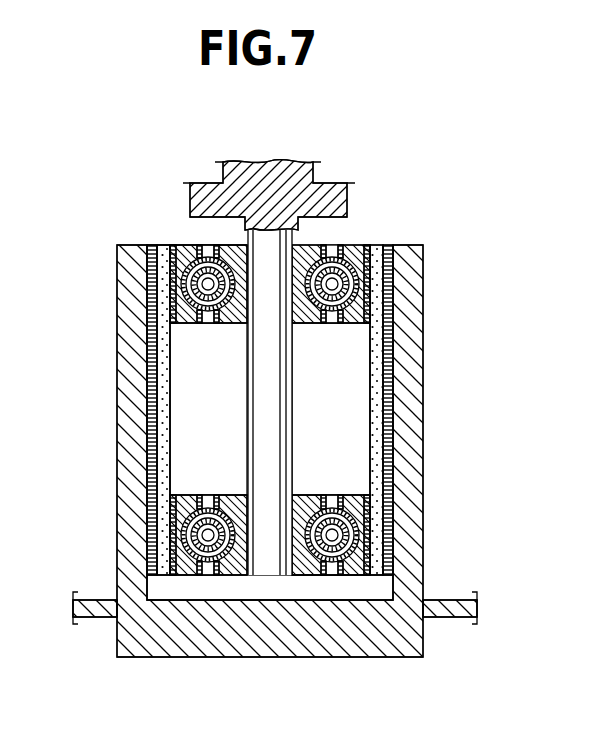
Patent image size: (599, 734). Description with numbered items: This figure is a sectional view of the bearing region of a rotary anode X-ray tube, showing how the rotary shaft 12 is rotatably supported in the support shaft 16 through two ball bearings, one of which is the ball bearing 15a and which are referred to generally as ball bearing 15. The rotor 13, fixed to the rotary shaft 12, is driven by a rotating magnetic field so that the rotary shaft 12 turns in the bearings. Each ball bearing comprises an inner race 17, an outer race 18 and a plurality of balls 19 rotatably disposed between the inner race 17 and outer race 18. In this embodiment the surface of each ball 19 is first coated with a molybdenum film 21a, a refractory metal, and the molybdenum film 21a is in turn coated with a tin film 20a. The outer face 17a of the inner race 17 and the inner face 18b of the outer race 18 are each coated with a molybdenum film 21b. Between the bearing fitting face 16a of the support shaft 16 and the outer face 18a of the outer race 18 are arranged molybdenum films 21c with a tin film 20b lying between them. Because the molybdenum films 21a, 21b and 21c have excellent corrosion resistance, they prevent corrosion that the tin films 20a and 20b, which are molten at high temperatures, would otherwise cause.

The rotary shaft 12 is at (293, 431).
The rotor 13 is at (331, 183).
The ball bearing 15 is at (207, 488).
The ball bearing 15a is at (171, 238).
The support shaft 16 is at (393, 612).
The bearing fitting face 16a is at (423, 633).
The inner race 17 is at (313, 324).
The outer face of inner race 17a is at (308, 575).
The outer race 18 is at (378, 344).
The outer face of outer race 18a is at (361, 495).
The inner face of outer race 18b is at (355, 575).
The ball 19 is at (343, 324).
The tin film 20a is at (213, 324).
The tin film 20b is at (386, 531).
The molybdenum film 21a is at (218, 325).
The molybdenum film 21b is at (322, 245).
The molybdenum film 21c is at (392, 239).